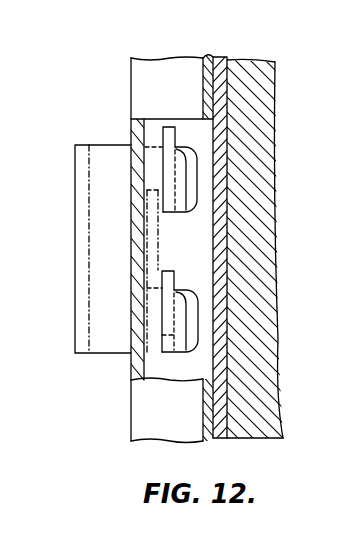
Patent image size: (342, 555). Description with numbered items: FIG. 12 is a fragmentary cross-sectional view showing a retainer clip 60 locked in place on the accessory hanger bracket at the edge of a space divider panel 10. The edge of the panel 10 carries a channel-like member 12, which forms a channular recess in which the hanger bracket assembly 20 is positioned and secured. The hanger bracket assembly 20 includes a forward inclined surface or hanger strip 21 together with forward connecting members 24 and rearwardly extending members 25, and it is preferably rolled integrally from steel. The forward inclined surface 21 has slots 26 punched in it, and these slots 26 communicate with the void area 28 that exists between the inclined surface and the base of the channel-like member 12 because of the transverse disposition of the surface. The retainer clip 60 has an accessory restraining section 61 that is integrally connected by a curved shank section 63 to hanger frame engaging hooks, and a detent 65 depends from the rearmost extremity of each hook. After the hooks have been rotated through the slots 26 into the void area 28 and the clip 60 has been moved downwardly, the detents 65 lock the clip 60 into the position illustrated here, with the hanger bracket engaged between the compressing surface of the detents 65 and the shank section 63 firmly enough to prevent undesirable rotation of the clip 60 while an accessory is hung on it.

The space divider panel 10 is at (275, 62).
The channel-like member 12 is at (225, 57).
The hanger bracket assembly 20 is at (172, 58).
The forward inclined surface 21 is at (152, 120).
The forward connecting member 24 is at (207, 60).
The rearwardly extending member 25 is at (145, 86).
The slot 26 is at (166, 133).
The void area 28 is at (190, 247).
The retainer clip 60 is at (75, 207).
The accessory restraining section 61 is at (76, 280).
The curved shank section 63 is at (116, 247).
The detent 65 is at (192, 186).